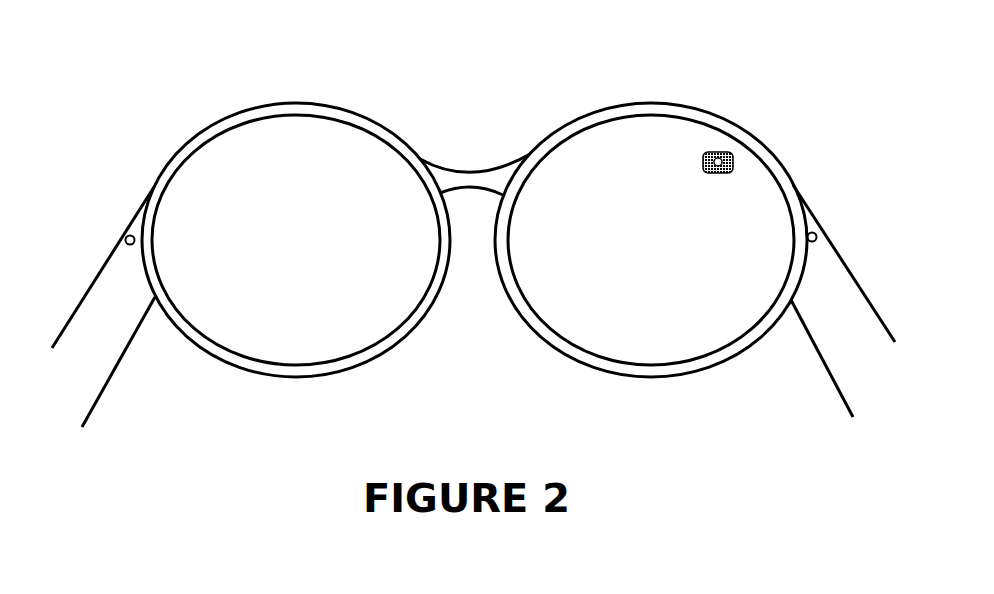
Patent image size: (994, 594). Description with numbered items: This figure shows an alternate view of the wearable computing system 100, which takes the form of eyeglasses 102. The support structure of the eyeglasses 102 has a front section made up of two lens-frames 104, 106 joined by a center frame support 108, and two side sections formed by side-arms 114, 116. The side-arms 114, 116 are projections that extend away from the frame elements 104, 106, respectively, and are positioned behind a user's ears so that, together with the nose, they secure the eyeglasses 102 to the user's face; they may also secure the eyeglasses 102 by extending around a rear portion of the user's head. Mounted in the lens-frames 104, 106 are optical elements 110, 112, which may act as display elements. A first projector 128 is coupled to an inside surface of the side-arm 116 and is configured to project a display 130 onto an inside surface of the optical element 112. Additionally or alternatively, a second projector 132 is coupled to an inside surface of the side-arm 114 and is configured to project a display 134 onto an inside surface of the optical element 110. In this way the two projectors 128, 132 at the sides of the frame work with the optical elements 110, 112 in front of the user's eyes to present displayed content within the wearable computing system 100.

The wearable computing system 100 is at (752, 457).
The eyeglasses 102 is at (168, 103).
The lens-frame 104 is at (748, 356).
The lens-frame 106 is at (178, 330).
The center frame support 108 is at (457, 172).
The optical element 110 is at (653, 342).
The optical element 112 is at (305, 345).
The side-arm 114 is at (842, 253).
The side-arm 116 is at (105, 260).
The first projector 128 is at (132, 232).
The display 130 is at (270, 153).
The second projector 132 is at (812, 228).
The display 134 is at (730, 175).